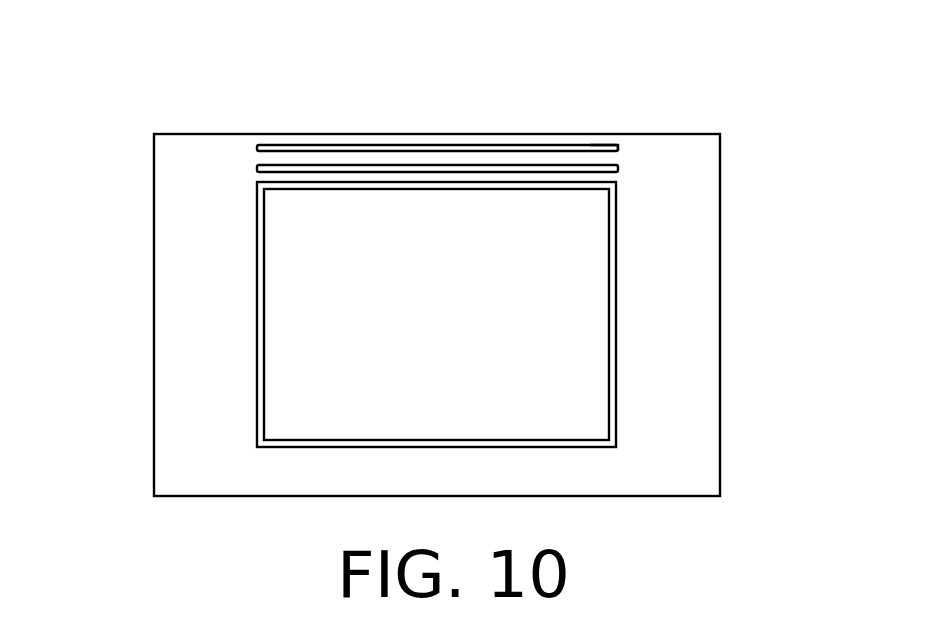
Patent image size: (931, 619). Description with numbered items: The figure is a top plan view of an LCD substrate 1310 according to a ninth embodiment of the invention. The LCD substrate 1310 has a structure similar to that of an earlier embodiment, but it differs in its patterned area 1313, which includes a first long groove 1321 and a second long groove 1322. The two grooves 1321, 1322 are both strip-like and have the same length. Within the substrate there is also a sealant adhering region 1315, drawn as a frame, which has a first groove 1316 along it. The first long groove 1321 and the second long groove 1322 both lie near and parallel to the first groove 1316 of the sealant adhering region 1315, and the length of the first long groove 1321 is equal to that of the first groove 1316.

The LCD substrate 1310 is at (420, 45).
The patterned area 1313 is at (619, 139).
The sealant adhering region 1315 is at (621, 300).
The first groove 1316 is at (518, 185).
The first long groove 1321 is at (258, 152).
The second long groove 1322 is at (262, 169).